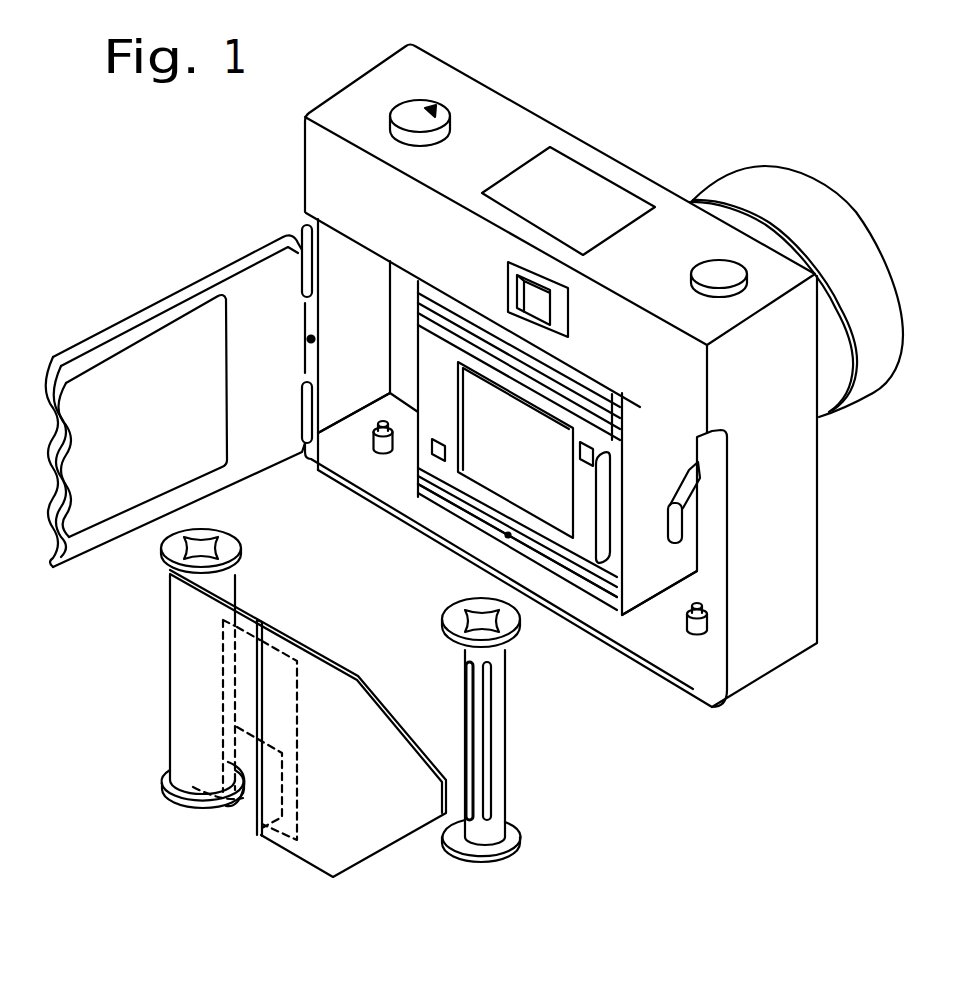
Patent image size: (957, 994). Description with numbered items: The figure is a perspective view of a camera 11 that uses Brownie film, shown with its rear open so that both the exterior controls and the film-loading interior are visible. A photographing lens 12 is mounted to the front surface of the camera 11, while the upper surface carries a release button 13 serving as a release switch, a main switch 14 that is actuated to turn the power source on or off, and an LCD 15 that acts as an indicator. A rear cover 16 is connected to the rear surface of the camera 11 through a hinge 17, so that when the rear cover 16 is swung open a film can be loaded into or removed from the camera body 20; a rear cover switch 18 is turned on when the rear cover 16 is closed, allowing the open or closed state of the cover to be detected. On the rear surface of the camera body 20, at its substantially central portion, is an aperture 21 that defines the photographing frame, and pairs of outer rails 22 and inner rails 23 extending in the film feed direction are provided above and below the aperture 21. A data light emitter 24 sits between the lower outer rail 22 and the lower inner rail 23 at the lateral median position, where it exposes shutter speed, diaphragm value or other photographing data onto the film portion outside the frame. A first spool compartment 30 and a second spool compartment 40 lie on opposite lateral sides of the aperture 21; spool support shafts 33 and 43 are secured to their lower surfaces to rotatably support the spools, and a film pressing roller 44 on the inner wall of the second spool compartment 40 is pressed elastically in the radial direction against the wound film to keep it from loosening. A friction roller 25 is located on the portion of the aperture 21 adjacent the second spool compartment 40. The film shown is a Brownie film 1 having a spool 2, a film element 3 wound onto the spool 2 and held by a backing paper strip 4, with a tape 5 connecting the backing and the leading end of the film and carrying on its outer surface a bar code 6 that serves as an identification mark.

The Brownie film 1 is at (257, 852).
The spool 2 is at (167, 557).
The film element 3 is at (364, 839).
The backing paper strip 4 is at (183, 741).
The tape 5 is at (298, 700).
The bar code 6 is at (243, 813).
The camera 11 is at (505, 128).
The photographing lens 12 is at (877, 303).
The release button 13 is at (718, 260).
The main switch 14 is at (403, 113).
The LCD 15 is at (558, 183).
The rear cover 16 is at (137, 317).
The hinge 17 is at (307, 272).
The rear cover switch 18 is at (308, 342).
The camera body 20 is at (493, 500).
The aperture 21 is at (560, 510).
The outer rails 22 is at (441, 513).
The inner rails 23 is at (420, 490).
The data light emitter 24 is at (508, 537).
The friction roller 25 is at (602, 497).
The first spool compartment 30 is at (360, 470).
The spool support shaft 33 is at (387, 454).
The second spool compartment 40 is at (663, 640).
The spool support shaft 43 is at (693, 635).
The film pressing roller 44 is at (677, 520).